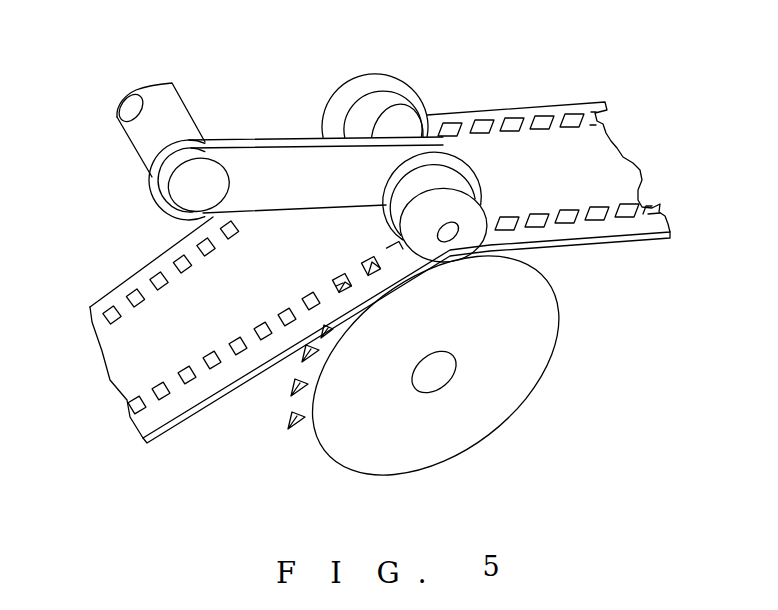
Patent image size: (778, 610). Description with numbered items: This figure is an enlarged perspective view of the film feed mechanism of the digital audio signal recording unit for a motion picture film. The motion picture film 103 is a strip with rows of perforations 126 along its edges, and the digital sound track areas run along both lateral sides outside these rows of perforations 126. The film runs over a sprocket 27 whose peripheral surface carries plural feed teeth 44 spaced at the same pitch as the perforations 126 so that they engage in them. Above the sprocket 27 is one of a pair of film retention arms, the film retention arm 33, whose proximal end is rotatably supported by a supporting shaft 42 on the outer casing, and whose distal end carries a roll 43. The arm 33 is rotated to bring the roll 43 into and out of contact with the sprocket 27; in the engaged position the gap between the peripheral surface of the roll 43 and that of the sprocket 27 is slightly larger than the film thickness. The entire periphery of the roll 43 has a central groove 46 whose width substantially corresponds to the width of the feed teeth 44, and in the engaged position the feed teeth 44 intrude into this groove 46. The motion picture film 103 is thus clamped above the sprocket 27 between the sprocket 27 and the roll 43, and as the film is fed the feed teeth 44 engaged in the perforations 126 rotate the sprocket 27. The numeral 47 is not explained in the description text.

The sprocket 27 is at (527, 360).
The film retention arm 33 is at (282, 160).
The supporting shaft 42 is at (173, 113).
The roll 43 is at (385, 73).
The feed teeth 44 is at (291, 398).
The central groove 46 is at (370, 98).
The pulley 47 is at (425, 165).
The motion picture film 103 is at (619, 228).
The perforations 126 is at (112, 316).